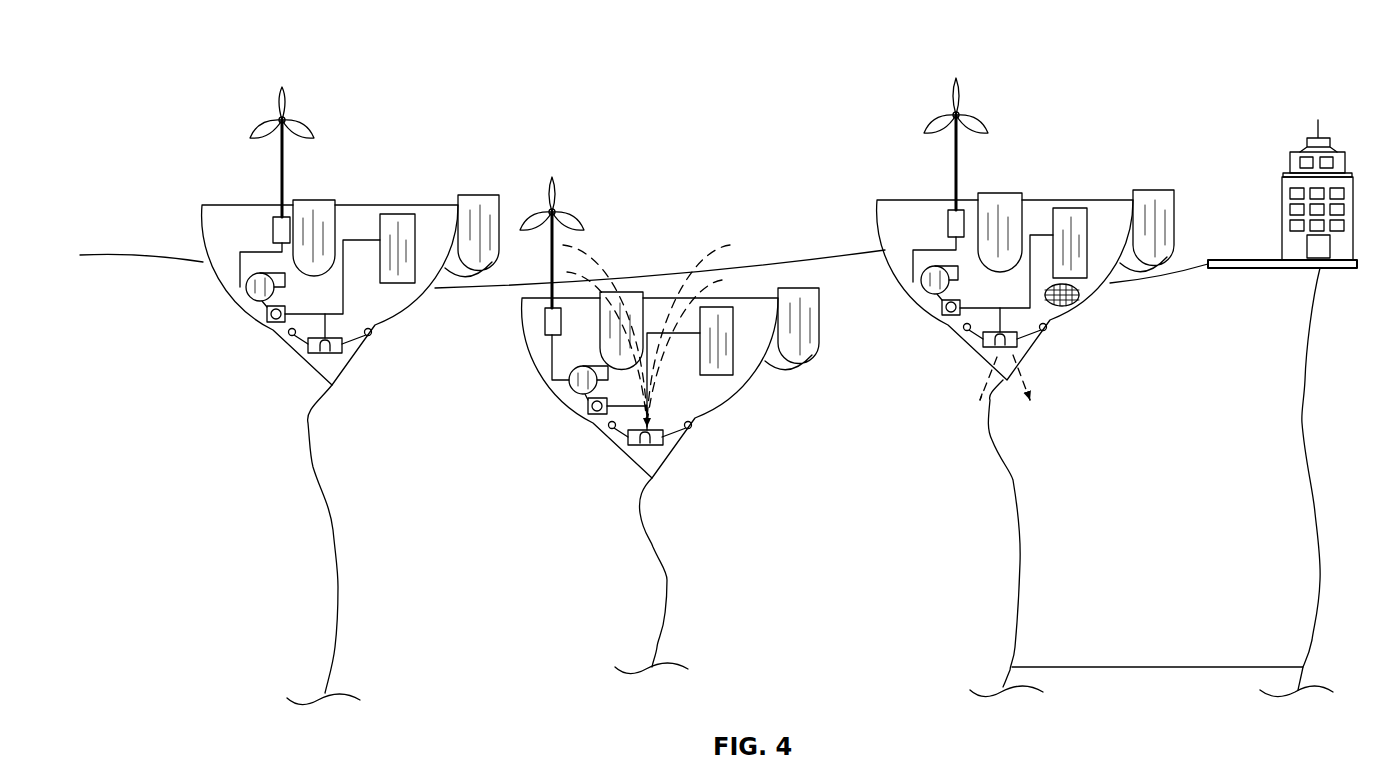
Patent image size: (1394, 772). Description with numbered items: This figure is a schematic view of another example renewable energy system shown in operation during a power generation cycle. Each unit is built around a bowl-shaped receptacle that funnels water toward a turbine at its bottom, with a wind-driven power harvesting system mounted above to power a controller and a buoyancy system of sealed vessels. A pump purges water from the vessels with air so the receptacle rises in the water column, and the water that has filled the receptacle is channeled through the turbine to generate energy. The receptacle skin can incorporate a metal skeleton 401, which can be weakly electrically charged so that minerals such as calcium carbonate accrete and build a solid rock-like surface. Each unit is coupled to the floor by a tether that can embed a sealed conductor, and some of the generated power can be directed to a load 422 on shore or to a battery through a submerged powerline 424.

The metal skeleton 401 is at (1117, 325).
The load 422 is at (1282, 153).
The submerged powerline 424 is at (1303, 422).